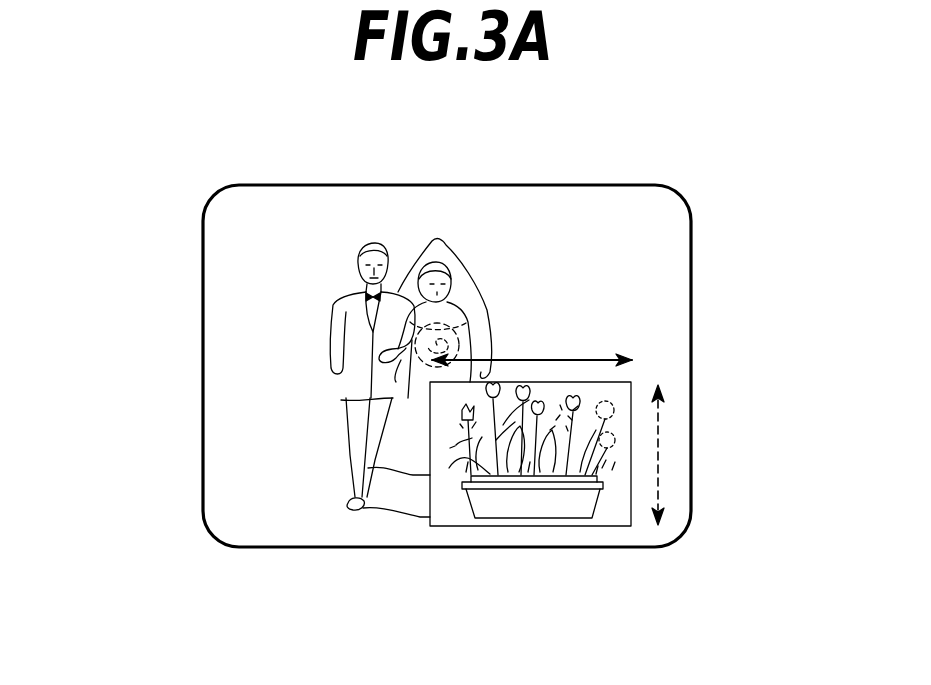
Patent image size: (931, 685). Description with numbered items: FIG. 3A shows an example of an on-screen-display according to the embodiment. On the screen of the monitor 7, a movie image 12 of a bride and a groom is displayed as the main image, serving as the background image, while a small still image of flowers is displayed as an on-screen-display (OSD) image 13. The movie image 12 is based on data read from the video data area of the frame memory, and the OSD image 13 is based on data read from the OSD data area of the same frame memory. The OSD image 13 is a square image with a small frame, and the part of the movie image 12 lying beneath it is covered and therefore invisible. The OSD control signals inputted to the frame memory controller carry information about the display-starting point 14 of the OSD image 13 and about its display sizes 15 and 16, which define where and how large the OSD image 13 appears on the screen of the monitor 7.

The monitor 7 is at (684, 167).
The movie image 12 is at (330, 358).
The OSD image 13 is at (631, 453).
The display-starting point 14 is at (430, 382).
The display size 15 is at (585, 358).
The display size 16 is at (659, 477).